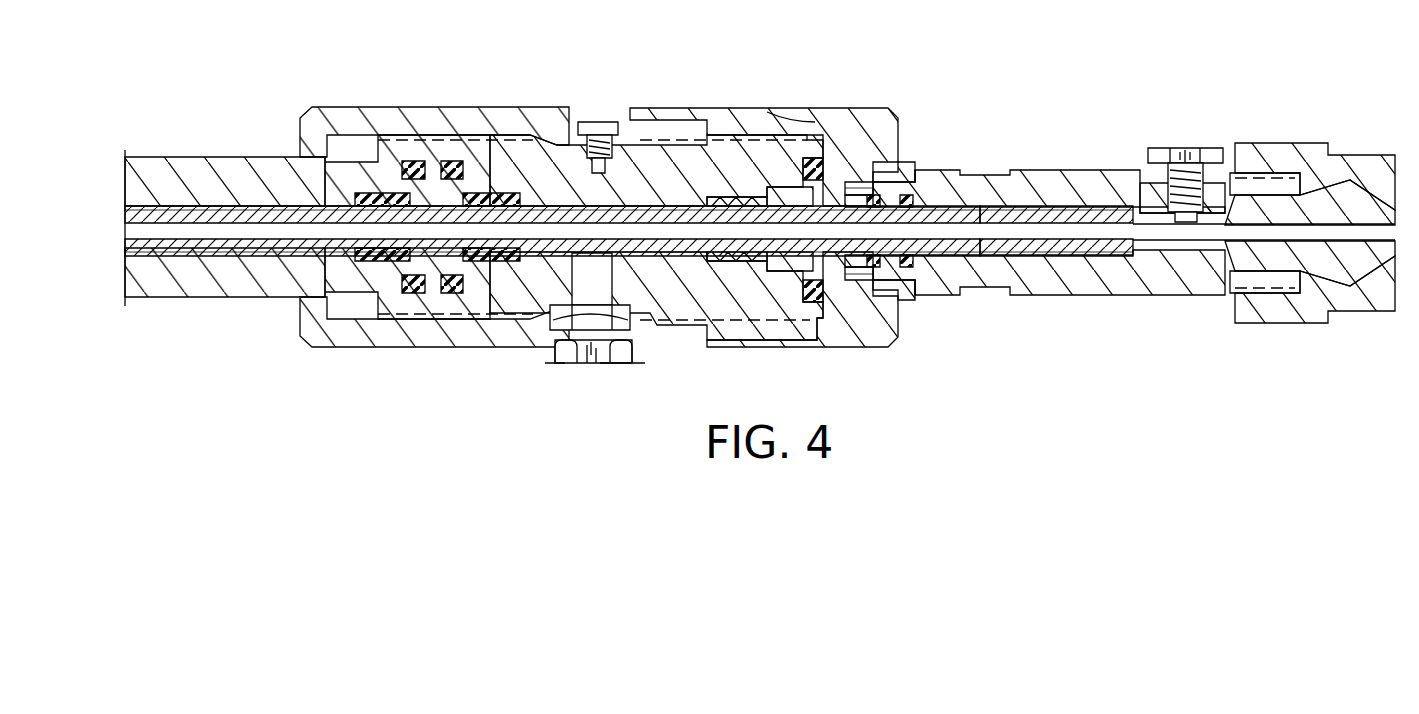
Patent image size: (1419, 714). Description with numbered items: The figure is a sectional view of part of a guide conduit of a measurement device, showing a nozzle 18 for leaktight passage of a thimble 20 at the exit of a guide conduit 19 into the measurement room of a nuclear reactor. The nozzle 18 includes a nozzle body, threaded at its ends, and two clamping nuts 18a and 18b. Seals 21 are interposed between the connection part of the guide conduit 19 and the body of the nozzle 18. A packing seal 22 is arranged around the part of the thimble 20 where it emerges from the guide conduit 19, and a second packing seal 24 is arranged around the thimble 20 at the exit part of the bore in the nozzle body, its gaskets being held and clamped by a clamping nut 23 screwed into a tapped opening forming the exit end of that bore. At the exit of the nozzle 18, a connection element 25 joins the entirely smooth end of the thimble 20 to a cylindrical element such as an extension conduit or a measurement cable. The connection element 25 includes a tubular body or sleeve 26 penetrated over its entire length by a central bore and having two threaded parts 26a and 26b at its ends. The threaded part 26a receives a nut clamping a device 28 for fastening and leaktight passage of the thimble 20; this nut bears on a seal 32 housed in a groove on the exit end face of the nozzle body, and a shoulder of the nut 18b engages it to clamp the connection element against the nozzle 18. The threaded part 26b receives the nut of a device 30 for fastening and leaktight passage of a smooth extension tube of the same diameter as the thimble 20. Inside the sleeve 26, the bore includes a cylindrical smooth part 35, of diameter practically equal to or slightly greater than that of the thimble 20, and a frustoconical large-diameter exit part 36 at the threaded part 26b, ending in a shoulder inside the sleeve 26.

The nozzle 18 is at (592, 104).
The clamping nut 18a is at (343, 114).
The clamping nut 18b is at (840, 118).
The guide conduit 19 is at (205, 173).
The thimble 20 is at (232, 233).
The seals 21 is at (455, 296).
The packing seal 22 is at (388, 200).
The clamping nut 23 is at (785, 262).
The second packing seal 24 is at (722, 265).
The connection element 25 is at (1090, 151).
The sleeve 26 is at (1038, 180).
The threaded part 26a is at (882, 282).
The threaded part 26b is at (1290, 287).
The device for fastening and leaktight passage of the thimble 28 is at (936, 153).
The device for fastening and leaktight passage of the smooth cylindrical element 30 is at (1363, 143).
The seal 32 is at (818, 300).
The cylindrical smooth part of the bore 35 is at (1057, 248).
The large-diameter exit part of the bore 36 is at (1255, 262).